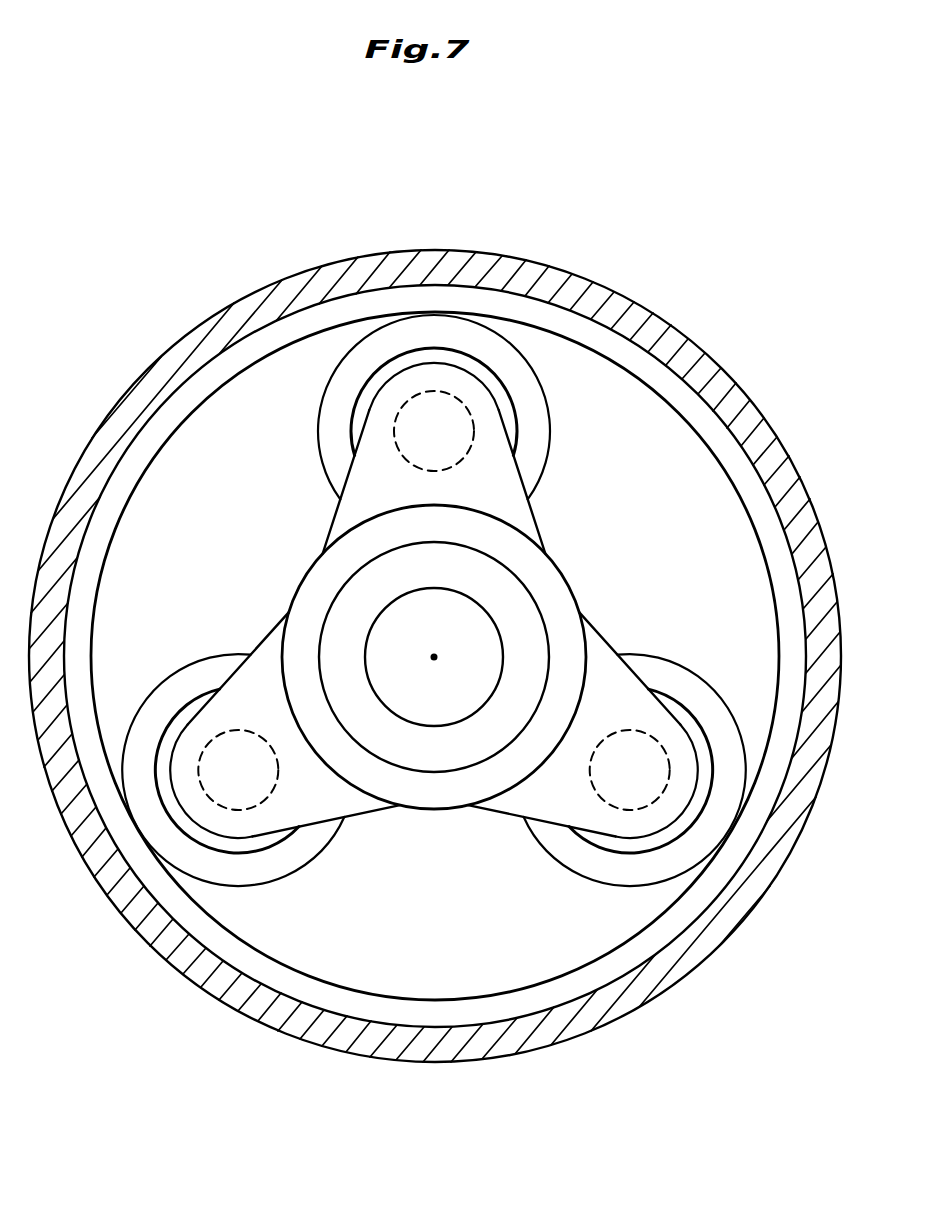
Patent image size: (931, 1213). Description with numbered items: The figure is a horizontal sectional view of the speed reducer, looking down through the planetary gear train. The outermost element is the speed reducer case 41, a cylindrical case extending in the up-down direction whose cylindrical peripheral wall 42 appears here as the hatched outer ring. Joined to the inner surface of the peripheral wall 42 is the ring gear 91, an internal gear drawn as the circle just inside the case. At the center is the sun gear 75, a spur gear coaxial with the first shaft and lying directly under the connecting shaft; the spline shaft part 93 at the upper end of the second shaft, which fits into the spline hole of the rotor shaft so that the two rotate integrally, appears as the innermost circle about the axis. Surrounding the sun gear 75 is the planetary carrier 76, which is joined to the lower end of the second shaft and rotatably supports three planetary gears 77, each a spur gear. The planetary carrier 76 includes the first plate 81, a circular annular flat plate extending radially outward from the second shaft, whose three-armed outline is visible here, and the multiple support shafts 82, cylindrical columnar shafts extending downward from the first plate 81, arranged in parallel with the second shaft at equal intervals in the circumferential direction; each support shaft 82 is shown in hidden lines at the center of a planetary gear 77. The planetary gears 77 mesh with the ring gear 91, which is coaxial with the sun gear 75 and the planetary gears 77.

The speed reducer case 41 is at (675, 320).
The peripheral wall 42 is at (732, 398).
The ring gear 91 is at (743, 488).
The spline shaft part 93 is at (482, 617).
The sun gear 75 is at (297, 578).
The planetary carrier 76 is at (367, 817).
The planetary gear 77 is at (327, 426).
The first plate 81 is at (522, 805).
The support shaft 82 is at (211, 741).